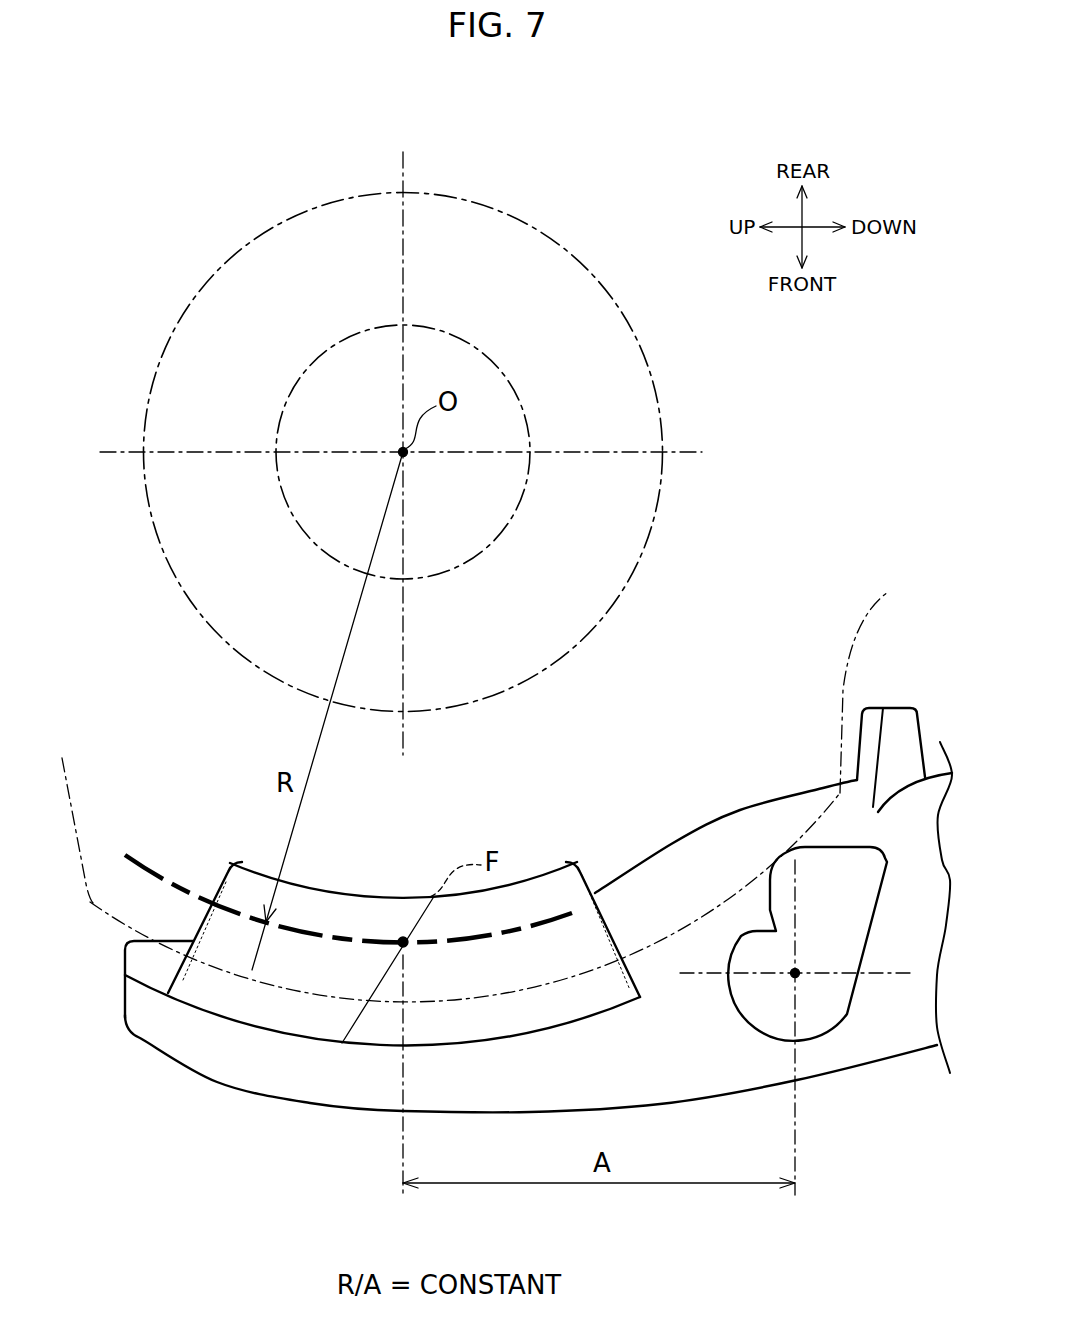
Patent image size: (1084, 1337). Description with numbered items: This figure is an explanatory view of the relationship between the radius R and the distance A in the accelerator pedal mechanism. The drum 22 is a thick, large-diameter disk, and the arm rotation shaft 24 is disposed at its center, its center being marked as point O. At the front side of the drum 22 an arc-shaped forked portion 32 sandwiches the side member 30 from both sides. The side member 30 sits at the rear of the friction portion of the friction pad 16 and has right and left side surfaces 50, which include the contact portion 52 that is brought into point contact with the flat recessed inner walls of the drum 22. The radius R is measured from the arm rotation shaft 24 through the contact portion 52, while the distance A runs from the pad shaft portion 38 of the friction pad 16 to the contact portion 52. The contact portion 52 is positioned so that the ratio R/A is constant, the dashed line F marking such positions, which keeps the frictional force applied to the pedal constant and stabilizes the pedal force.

The friction pad 16 is at (277, 1132).
The drum 22 is at (148, 270).
The arm rotation shaft 24 is at (467, 343).
The side member 30 is at (215, 1028).
The forked portion 32 is at (82, 882).
The pad shaft portion 38 is at (822, 1007).
The side surfaces 50 is at (352, 973).
The contact portion 52 is at (403, 938).